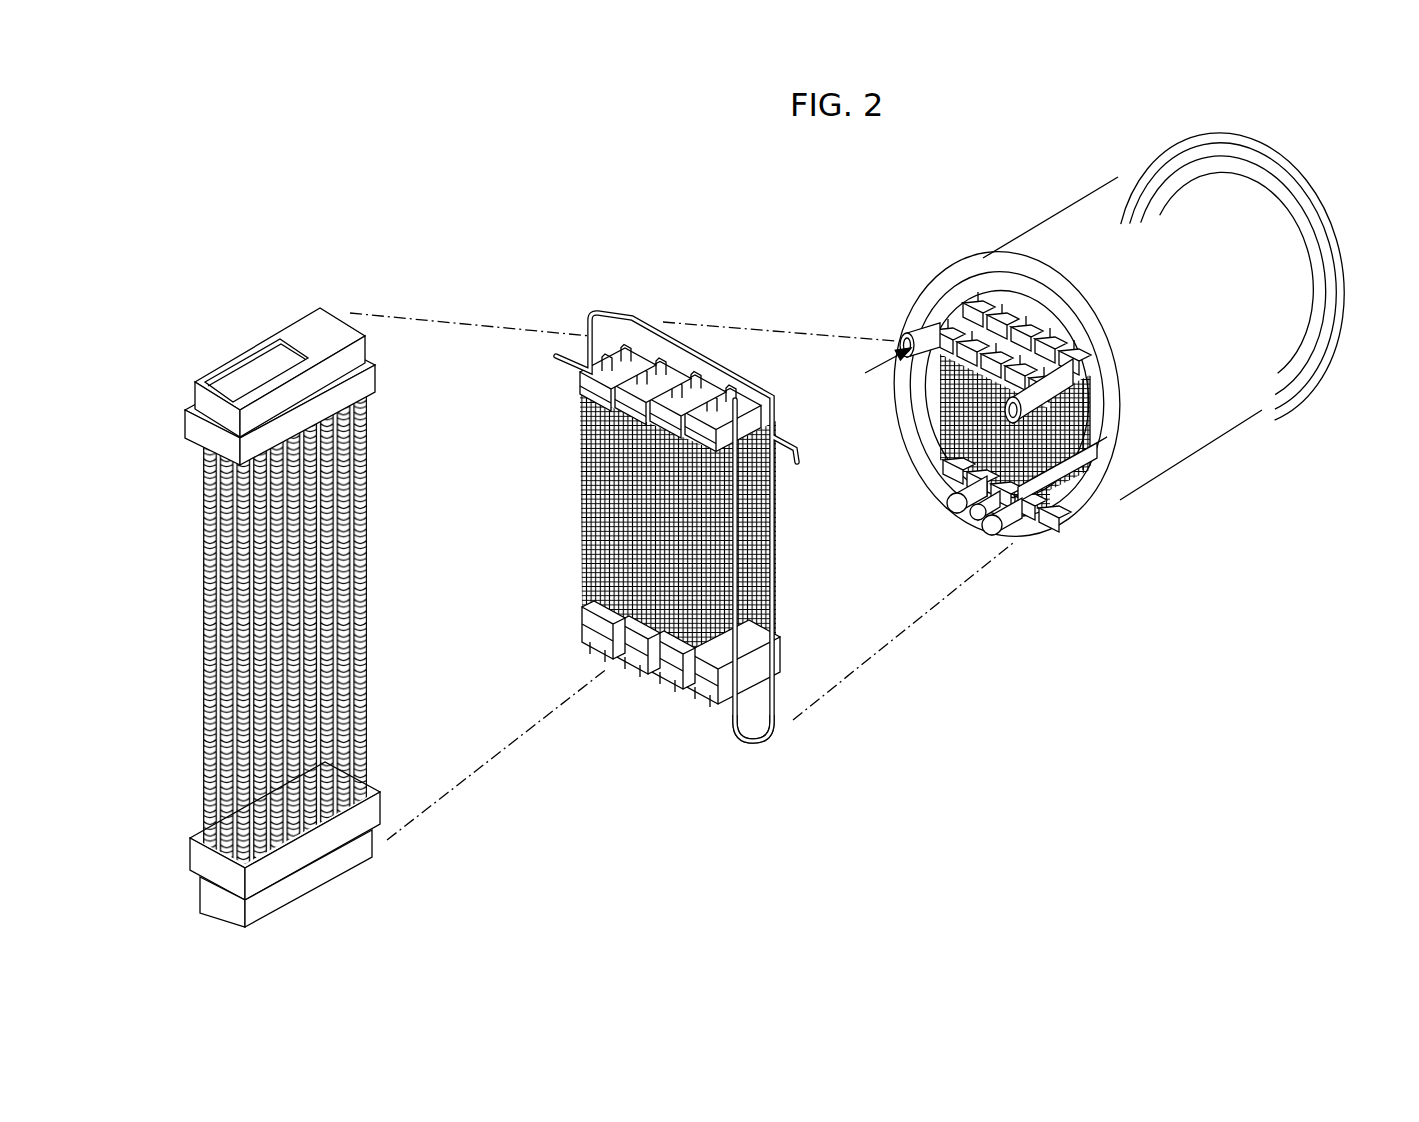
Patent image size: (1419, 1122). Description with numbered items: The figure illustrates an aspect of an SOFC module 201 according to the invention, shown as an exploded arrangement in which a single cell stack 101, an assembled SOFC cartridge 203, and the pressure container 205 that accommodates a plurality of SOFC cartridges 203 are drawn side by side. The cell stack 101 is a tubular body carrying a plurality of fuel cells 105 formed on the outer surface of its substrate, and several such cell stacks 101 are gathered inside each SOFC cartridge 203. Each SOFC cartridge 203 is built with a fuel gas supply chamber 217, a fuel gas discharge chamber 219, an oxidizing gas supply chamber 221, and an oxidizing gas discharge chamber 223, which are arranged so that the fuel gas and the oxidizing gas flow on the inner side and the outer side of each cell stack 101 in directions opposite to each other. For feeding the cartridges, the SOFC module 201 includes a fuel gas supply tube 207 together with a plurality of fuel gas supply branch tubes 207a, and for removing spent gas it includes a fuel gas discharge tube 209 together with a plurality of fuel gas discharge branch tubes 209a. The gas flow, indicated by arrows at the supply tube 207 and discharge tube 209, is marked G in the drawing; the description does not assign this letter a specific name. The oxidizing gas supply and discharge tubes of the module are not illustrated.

The cell stack 101 is at (316, 617).
The fuel cells 105 is at (357, 493).
The SOFC module 201 is at (1094, 342).
The SOFC cartridge 203 is at (599, 569).
The pressure container 205 is at (1083, 217).
The fuel gas supply tube 207 is at (910, 334).
The fuel gas supply branch tubes 207a is at (590, 333).
The fuel gas discharge tube 209 is at (945, 497).
The fuel gas discharge branch tubes 209a is at (742, 745).
The fuel gas supply chamber 217 is at (362, 352).
The fuel gas discharge chamber 219 is at (347, 853).
The oxidizing gas supply chamber 221 is at (383, 807).
The oxidizing gas discharge chamber 223 is at (370, 380).
The gas G is at (872, 363).